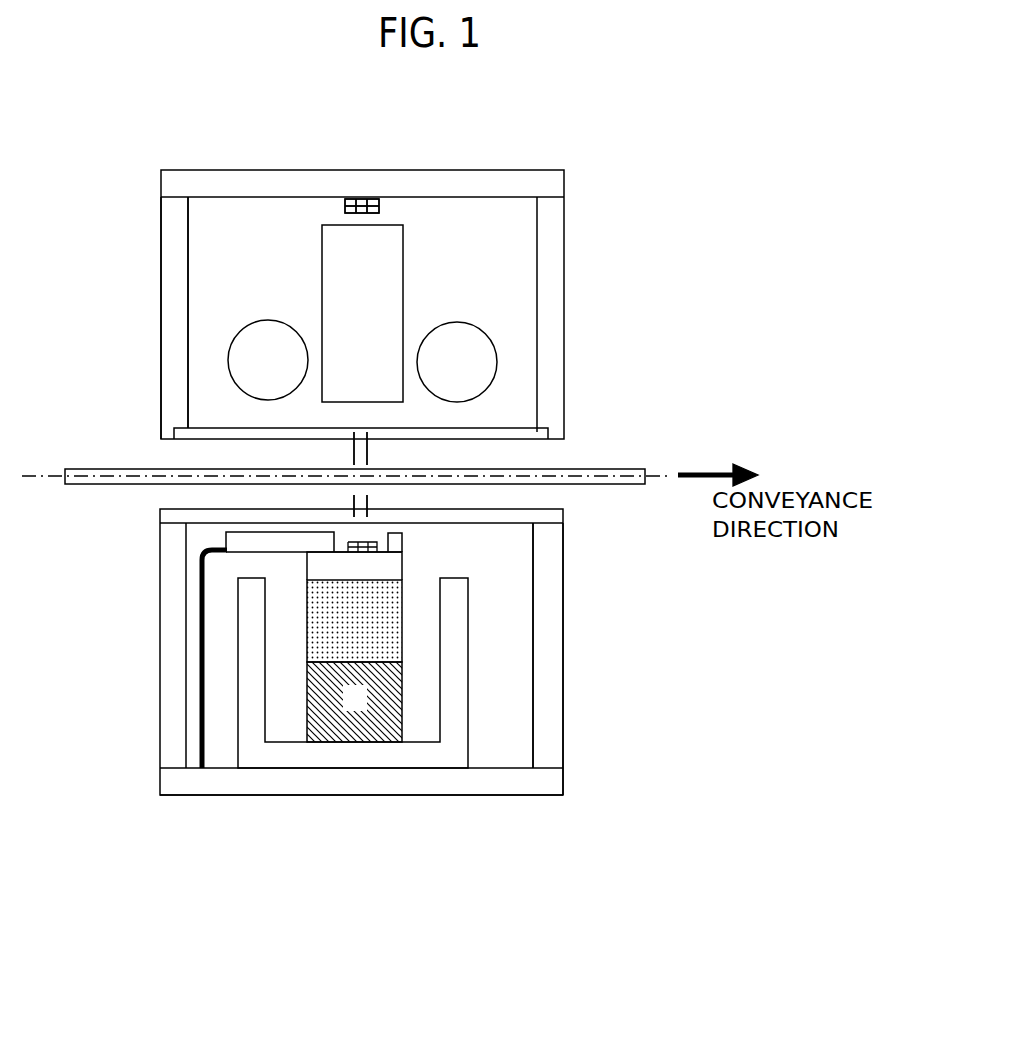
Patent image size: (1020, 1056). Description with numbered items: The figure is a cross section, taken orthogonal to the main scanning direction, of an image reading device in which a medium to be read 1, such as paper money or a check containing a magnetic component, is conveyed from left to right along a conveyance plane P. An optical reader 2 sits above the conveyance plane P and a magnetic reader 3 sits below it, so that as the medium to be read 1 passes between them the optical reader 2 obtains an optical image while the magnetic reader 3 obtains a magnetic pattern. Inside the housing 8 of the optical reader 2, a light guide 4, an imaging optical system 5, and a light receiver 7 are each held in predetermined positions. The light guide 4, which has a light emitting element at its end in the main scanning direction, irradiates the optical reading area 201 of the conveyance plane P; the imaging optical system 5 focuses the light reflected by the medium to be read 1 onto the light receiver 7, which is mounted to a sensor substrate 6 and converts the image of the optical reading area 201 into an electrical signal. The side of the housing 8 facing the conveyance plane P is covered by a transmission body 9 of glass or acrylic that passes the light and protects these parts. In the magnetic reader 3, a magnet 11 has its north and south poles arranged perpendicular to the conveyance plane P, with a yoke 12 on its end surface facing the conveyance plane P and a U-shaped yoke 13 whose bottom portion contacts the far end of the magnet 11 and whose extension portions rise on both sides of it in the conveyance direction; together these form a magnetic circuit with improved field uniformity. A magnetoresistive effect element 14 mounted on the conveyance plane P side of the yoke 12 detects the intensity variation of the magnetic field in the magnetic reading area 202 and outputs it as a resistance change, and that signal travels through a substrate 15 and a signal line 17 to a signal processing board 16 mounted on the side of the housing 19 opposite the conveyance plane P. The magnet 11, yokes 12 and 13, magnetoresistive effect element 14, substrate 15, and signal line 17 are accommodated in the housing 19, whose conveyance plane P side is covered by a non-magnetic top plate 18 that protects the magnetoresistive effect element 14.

The medium to be read 1 is at (645, 473).
The optical reader 2 is at (597, 296).
The magnetic reader 3 is at (597, 672).
The light guide 4 is at (254, 360).
The imaging optical system 5 is at (386, 314).
The sensor substrate 6 is at (202, 183).
The light receiver 7 is at (364, 205).
The housing 8 is at (176, 333).
The transmission body 9 is at (562, 437).
The magnet 11 is at (380, 680).
The yoke 12 is at (363, 567).
The yoke 13 is at (238, 613).
The magnetoresistive effect element 14 is at (403, 545).
The substrate 15 is at (230, 537).
The signal processing board 16 is at (307, 782).
The signal line 17 is at (200, 687).
The non-magnetic top plate 18 is at (560, 518).
The housing 19 is at (562, 715).
The optical reading area 201 is at (352, 462).
The magnetic reading area 202 is at (352, 500).
The conveyance plane P is at (607, 465).